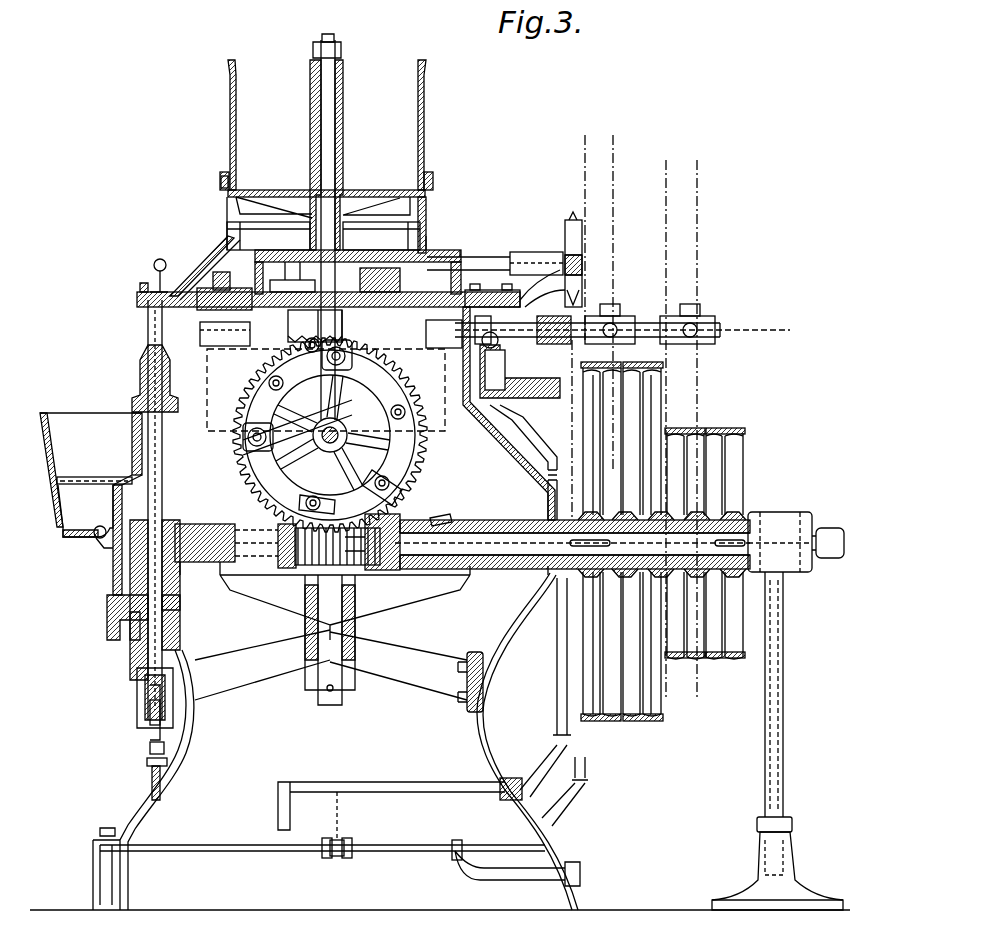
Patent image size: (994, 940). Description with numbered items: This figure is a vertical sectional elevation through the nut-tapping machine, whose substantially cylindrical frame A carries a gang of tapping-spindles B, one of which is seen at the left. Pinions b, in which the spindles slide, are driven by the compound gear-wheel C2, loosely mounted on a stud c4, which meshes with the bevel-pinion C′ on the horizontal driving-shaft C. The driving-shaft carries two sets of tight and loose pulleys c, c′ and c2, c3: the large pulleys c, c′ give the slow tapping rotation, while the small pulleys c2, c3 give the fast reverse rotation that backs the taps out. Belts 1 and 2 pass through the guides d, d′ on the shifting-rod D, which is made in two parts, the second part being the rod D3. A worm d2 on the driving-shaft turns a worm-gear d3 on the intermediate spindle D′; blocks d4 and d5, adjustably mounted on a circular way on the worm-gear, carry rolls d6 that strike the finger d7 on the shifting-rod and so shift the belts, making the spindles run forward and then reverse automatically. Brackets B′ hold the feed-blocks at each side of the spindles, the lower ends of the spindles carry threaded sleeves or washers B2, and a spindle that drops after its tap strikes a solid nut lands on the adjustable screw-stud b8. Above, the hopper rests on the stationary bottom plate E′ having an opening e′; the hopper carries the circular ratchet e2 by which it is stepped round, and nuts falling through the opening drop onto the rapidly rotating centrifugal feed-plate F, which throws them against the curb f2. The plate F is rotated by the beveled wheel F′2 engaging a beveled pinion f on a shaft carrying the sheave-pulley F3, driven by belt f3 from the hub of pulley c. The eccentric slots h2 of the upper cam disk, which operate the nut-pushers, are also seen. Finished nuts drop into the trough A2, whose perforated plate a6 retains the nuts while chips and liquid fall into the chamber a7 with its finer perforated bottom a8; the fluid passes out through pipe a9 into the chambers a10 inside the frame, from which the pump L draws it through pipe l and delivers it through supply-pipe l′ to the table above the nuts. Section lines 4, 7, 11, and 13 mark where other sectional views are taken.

The stationary bottom plate E′ is at (408, 112).
The opening in bottom plate e′ is at (388, 192).
The circular ratchet e2 is at (222, 184).
The section line 7 is at (225, 240).
The centrifugal feed-plate F is at (365, 227).
The beveled wheel F′2 is at (292, 258).
The eccentric slots h2 is at (328, 280).
The shifting-rod section D3 is at (331, 336).
The beveled pinion f is at (495, 276).
The curb or wall f2 is at (432, 232).
The belt f3 is at (466, 262).
The sheave-pulley F3 is at (564, 236).
The shifting-rod D is at (513, 330).
The belt guide d is at (622, 322).
The belt guide d′ is at (702, 338).
The belt 1 is at (616, 226).
The belt 2 is at (694, 226).
The pump L is at (520, 380).
The intermediate driving-spindle D′ is at (350, 437).
The rolls d6 is at (248, 440).
The finger d7 is at (326, 390).
The adjustable block d5 is at (338, 375).
The adjustable block d4 is at (300, 418).
The worm-gear d3 is at (268, 488).
The tapping-spindles B is at (162, 484).
The trough A2 is at (91, 470).
The primary perforated plate a6 is at (102, 480).
The chamber a7 is at (108, 522).
The second perforated bottom a8 is at (96, 540).
The frame A is at (188, 735).
The pinions b is at (108, 592).
The brackets B′ is at (137, 680).
The threaded sleeves or washers B2 is at (142, 706).
The adjustable screw-studs b8 is at (150, 755).
The horizontal driving-shaft C is at (497, 540).
The bevel-pinion C′ is at (444, 522).
The worm d2 is at (300, 568).
The compound gear-wheel C2 is at (416, 605).
The stud c4 is at (330, 648).
The large tight pulley c is at (605, 723).
The large loose pulley c′ is at (646, 723).
The small pulley c2 is at (688, 658).
The small pulley c3 is at (724, 658).
The pipe a9 is at (552, 792).
The pipe l is at (356, 784).
The liquid chambers a10 is at (340, 839).
The supply-pipe l′ is at (157, 263).
The section line 11 is at (137, 292).
The section line 13 is at (192, 322).
The section line 4 is at (130, 330).